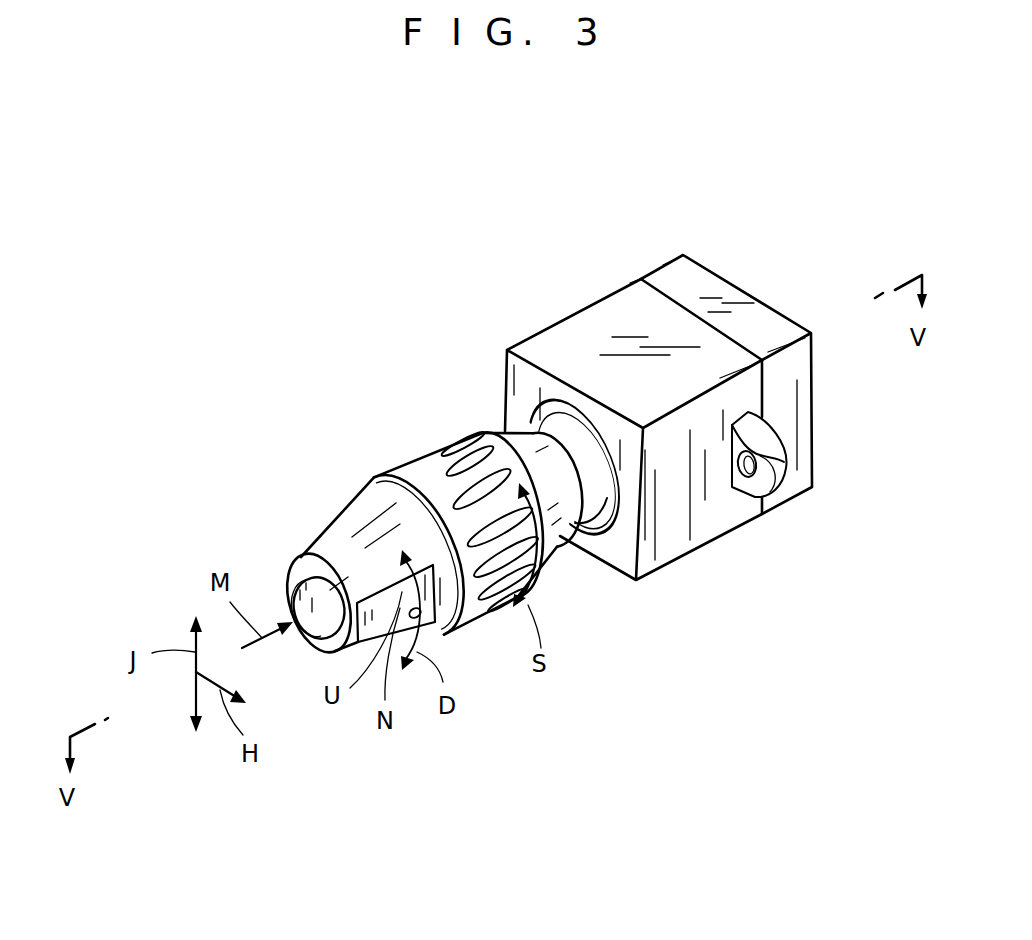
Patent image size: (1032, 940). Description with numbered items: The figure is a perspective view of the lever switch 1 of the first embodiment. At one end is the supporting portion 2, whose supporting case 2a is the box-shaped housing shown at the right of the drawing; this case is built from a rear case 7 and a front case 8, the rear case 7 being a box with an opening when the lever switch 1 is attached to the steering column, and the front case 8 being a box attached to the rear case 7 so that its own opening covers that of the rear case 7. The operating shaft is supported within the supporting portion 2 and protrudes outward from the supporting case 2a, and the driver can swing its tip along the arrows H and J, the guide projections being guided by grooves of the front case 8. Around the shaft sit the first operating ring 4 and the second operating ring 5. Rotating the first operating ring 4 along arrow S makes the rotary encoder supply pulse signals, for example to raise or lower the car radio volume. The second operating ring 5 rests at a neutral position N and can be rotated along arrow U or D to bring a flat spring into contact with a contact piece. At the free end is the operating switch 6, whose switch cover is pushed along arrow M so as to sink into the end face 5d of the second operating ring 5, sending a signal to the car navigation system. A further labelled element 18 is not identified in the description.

The lever switch 1 is at (457, 206).
The supporting portion 2 is at (664, 450).
The supporting case 2a is at (706, 763).
The first operating ring 4 is at (457, 429).
The second operating ring 5 is at (377, 574).
The end face 5d is at (330, 646).
The operating switch 6 is at (285, 578).
The rear case 7 is at (790, 498).
The front case 8 is at (657, 568).
The ring band 18 is at (565, 550).